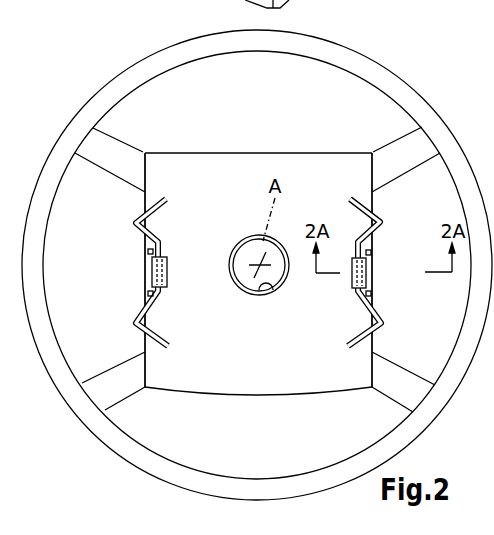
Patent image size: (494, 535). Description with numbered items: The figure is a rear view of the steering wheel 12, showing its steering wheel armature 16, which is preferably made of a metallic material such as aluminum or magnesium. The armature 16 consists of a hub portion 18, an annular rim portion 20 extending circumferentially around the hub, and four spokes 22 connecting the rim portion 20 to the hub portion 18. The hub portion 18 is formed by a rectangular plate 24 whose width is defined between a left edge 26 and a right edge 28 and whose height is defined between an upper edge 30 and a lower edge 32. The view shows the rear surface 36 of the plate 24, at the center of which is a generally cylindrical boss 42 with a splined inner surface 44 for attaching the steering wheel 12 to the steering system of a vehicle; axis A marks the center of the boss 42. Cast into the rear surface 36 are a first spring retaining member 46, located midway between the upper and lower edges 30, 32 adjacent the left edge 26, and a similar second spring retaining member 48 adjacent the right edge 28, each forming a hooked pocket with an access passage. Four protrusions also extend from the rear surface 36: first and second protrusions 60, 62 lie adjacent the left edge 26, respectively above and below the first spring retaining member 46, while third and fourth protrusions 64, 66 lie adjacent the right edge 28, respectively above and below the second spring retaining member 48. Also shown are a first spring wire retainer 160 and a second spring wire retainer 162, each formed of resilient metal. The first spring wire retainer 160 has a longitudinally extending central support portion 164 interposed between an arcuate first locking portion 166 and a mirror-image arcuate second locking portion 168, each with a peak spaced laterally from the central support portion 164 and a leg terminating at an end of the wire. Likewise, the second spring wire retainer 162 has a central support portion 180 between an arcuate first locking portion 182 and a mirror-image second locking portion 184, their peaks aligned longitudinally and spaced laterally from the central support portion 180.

The steering wheel 12 is at (103, 452).
The steering wheel armature 16 is at (355, 54).
The hub portion 18 is at (210, 370).
The annular rim portion 20 is at (100, 108).
The spokes 22 is at (108, 152).
The rectangular plate 24 is at (249, 175).
The left edge 26 is at (373, 199).
The right edge 28 is at (144, 199).
The upper edge 30 is at (277, 152).
The lower edge 32 is at (263, 398).
The rear surface 36 is at (228, 210).
The boss 42 is at (250, 294).
The splined inner surface 44 is at (266, 289).
The first spring retaining member 46 is at (366, 275).
The second spring retaining member 48 is at (150, 273).
The first protrusion 60 is at (371, 252).
The second protrusion 62 is at (371, 295).
The third protrusion 64 is at (147, 252).
The fourth protrusion 66 is at (147, 293).
The first spring wire retainer 160 is at (387, 221).
The second spring wire retainer 162 is at (133, 223).
The central support portion 164 is at (356, 293).
The first locking portion 166 is at (378, 222).
The second locking portion 168 is at (372, 321).
The central support portion 180 is at (158, 294).
The first locking portion 182 is at (139, 222).
The second locking portion 184 is at (144, 318).